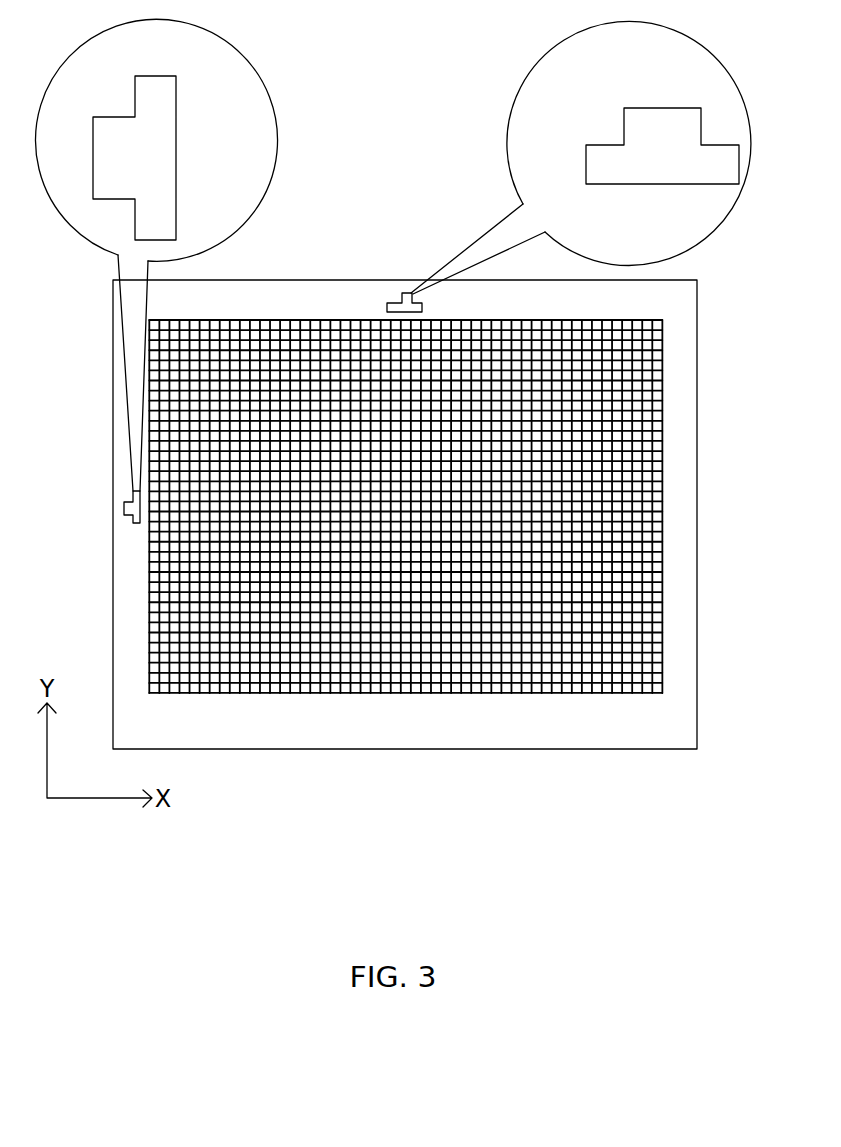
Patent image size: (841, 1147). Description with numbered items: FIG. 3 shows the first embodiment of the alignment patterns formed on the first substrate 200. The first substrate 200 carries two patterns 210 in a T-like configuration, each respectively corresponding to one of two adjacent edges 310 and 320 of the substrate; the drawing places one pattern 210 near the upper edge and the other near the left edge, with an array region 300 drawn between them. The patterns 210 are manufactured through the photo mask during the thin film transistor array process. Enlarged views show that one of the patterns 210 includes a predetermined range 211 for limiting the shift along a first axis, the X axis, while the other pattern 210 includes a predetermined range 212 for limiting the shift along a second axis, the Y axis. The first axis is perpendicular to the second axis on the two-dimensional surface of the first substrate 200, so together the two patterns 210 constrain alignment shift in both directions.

The first substrate 200 is at (408, 730).
The pattern 210 is at (403, 293).
The predetermined range 211 is at (176, 70).
The predetermined range 212 is at (575, 145).
The touch sensing layer 300 is at (402, 450).
The edge 310 is at (296, 319).
The edge 320 is at (148, 557).